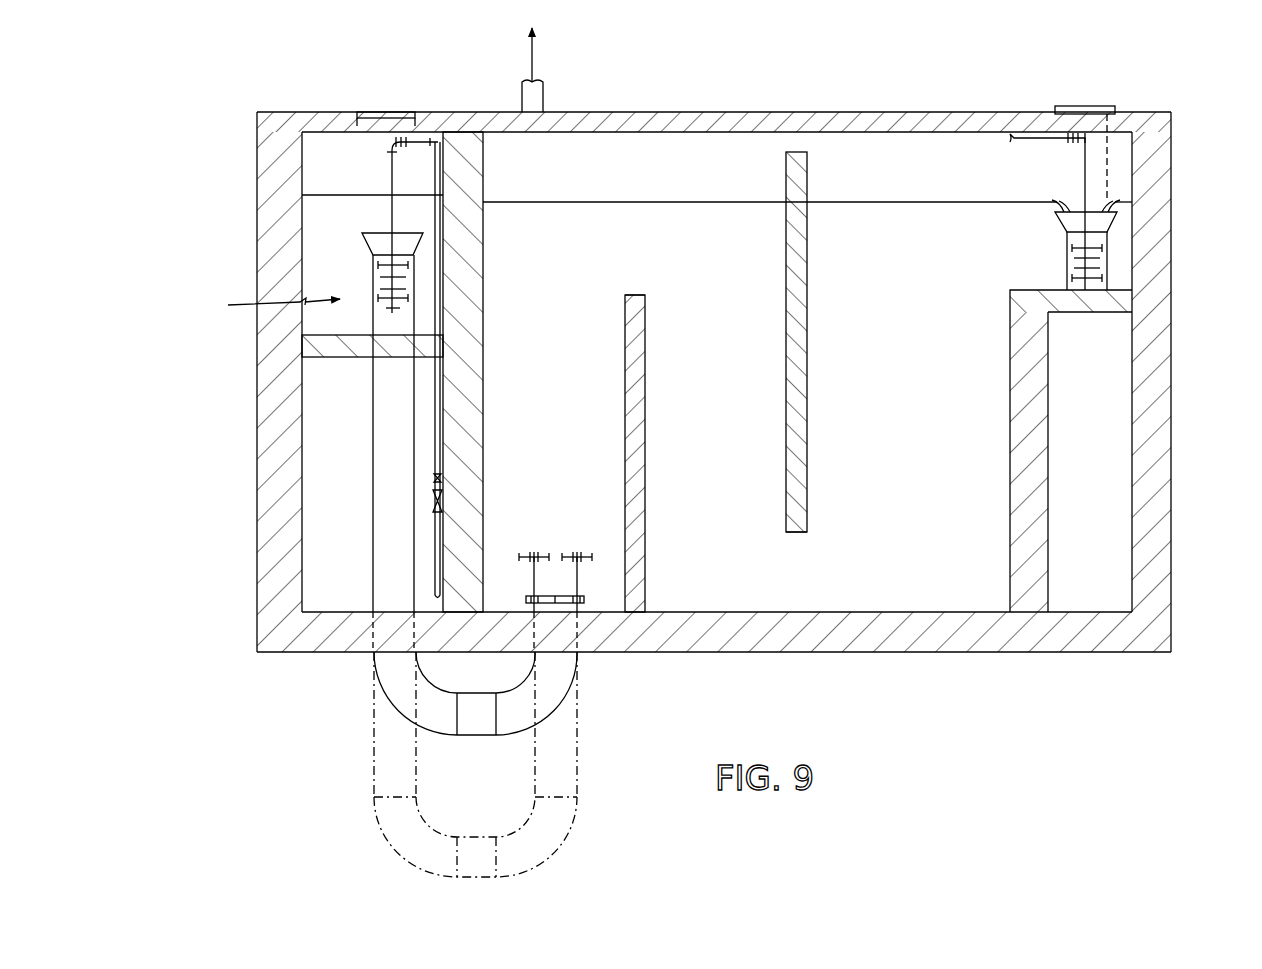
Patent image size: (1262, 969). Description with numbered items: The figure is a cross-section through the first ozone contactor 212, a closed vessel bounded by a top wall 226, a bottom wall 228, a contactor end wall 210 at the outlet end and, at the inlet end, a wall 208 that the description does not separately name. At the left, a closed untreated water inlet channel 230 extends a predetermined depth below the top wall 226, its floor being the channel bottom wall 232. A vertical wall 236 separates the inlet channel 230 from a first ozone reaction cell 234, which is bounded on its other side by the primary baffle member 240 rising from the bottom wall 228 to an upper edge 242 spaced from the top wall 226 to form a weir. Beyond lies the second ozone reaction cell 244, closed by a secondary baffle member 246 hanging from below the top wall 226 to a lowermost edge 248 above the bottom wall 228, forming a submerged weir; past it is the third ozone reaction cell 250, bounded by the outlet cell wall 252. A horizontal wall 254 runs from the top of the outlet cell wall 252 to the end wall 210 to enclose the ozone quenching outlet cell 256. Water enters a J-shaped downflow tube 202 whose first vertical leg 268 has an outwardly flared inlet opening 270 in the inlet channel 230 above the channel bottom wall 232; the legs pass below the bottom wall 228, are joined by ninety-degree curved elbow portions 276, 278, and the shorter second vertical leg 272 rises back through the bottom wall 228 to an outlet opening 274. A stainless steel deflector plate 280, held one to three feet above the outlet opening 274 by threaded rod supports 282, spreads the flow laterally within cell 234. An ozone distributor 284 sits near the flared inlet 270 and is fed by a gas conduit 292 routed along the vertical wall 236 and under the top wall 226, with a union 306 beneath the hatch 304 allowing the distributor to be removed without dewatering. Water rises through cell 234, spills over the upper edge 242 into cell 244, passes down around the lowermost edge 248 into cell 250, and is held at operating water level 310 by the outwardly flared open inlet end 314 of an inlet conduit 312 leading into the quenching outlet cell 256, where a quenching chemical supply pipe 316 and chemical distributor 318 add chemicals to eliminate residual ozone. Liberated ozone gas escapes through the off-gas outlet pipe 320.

The downflow tube 202 is at (380, 462).
The left side wall 208 is at (262, 346).
The contactor end wall 210 is at (1171, 343).
The first contactor 212 is at (892, 78).
The top wall 226 is at (684, 112).
The bottom wall 228 is at (810, 652).
The untreated water inlet channel 230 is at (316, 218).
The channel bottom wall 232 is at (325, 358).
The first ozone reaction cell 234 is at (587, 382).
The vertical wall 236 is at (483, 280).
The primary baffle member 240 is at (625, 442).
The upper edge 242 is at (634, 293).
The second ozone reaction cell 244 is at (747, 404).
The secondary baffle member 246 is at (786, 243).
The lowermost edge 248 is at (797, 532).
The third ozone reaction cell 250 is at (937, 404).
The outlet cell wall 252 is at (1010, 486).
The horizontal wall 254 is at (1117, 316).
The ozone quenching outlet cell 256 is at (1125, 463).
The first vertical leg 268 is at (380, 542).
The outwardly flared inlet opening 270 is at (362, 245).
The second vertical leg 272 is at (560, 652).
The outlet opening 274 is at (612, 606).
The curved elbow portion 276 is at (378, 668).
The curved elbow portion 278 is at (512, 735).
The deflector plate 280 is at (575, 550).
The threaded rod supports 282 is at (554, 540).
The ozone distributor 284 is at (261, 303).
The gas conduit 292 is at (443, 213).
The hatch 304 is at (387, 112).
The union 306 is at (392, 152).
The water level 310 is at (848, 202).
The inlet conduit 312 is at (1065, 254).
The outwardly flared open inlet end 314 is at (1055, 230).
The quenching chemical supply pipe 316 is at (1078, 165).
The chemical distributor 318 is at (1095, 236).
The off-gas outlet pipe 320 is at (546, 95).